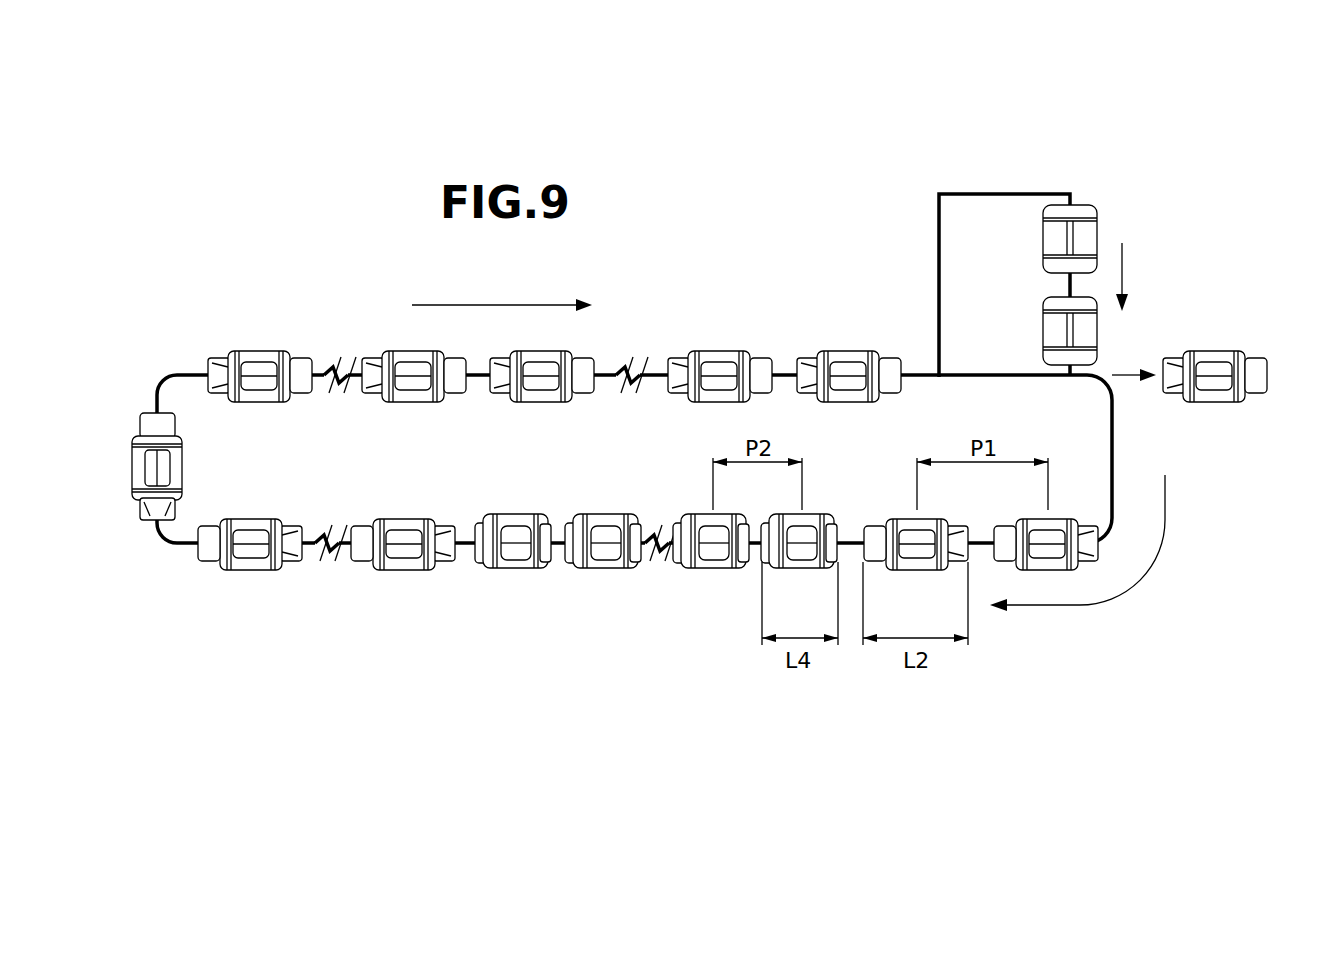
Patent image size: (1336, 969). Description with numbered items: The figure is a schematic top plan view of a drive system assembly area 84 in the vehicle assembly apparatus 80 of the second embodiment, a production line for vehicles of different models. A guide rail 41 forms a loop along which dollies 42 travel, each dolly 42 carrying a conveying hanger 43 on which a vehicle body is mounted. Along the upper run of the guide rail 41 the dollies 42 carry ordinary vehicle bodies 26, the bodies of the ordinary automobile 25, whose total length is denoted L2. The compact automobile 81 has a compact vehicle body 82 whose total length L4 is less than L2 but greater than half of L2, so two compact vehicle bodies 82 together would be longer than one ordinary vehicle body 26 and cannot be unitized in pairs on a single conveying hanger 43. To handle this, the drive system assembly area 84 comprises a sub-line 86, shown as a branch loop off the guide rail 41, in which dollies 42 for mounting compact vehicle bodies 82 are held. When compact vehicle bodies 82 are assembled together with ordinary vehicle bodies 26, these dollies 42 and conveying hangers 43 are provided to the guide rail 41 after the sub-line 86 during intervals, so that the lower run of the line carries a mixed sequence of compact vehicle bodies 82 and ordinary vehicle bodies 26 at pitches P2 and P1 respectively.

The vehicle assembly apparatus 80 is at (787, 162).
The drive system assembly area 84 is at (636, 318).
The sub-line 86 is at (1011, 188).
The guide rail 41 is at (463, 547).
The dolly 42 is at (252, 365).
The conveying hanger 43 is at (228, 352).
The ordinary automobile 25 is at (740, 466).
The ordinary vehicle body 26 is at (302, 365).
The compact automobile 81 is at (656, 593).
The compact vehicle body 82 is at (608, 562).